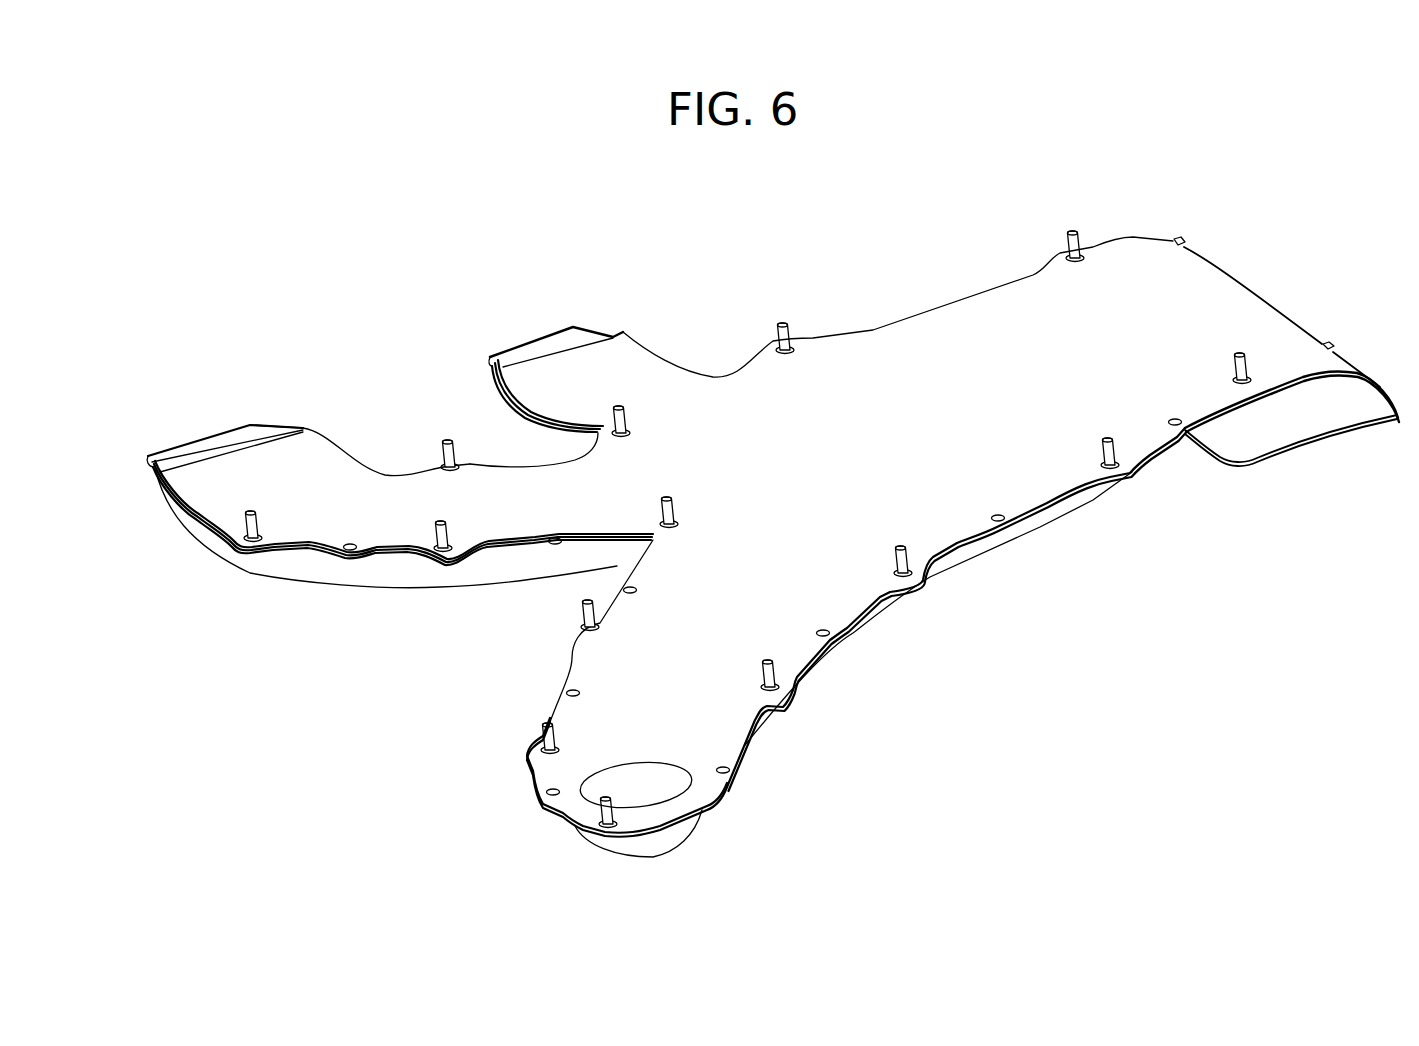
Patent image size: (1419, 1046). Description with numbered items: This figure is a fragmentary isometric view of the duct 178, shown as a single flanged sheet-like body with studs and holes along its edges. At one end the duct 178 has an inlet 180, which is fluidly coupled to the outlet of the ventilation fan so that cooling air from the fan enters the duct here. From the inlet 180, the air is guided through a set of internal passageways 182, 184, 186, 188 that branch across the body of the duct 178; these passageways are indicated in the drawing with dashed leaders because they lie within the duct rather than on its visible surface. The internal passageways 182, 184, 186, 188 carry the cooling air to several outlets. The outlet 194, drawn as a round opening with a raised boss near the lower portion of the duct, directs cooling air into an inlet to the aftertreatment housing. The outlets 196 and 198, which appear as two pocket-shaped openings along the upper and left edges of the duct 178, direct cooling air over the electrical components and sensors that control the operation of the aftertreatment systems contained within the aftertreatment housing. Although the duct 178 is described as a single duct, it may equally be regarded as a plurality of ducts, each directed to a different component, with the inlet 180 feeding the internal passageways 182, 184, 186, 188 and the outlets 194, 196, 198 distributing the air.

The duct 178 is at (773, 512).
The inlet 180 is at (1210, 320).
The internal passageway 182 is at (1167, 373).
The internal passageway 184 is at (797, 610).
The internal passageway 186 is at (637, 390).
The internal passageway 188 is at (317, 488).
The outlet 194 is at (650, 790).
The outlet 196 is at (548, 345).
The outlet 198 is at (228, 443).